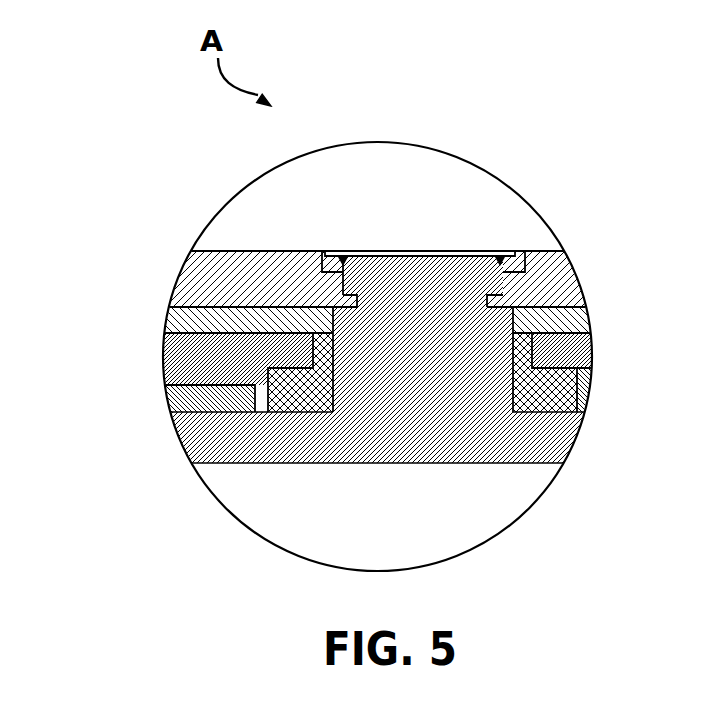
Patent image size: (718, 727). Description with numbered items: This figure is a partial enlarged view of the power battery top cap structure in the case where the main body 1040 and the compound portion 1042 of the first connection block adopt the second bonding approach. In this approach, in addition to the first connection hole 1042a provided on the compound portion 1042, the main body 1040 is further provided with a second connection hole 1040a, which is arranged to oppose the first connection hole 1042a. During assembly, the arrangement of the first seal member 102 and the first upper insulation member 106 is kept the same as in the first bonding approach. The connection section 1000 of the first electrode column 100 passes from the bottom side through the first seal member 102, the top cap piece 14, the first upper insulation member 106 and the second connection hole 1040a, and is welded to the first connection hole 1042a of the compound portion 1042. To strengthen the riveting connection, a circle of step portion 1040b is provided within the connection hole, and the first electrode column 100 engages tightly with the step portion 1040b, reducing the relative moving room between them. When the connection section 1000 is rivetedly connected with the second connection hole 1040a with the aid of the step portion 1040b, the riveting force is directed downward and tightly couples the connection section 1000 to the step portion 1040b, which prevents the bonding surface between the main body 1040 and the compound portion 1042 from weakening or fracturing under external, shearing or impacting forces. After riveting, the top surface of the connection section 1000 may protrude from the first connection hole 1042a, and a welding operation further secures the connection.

The first electrode column 100 is at (197, 437).
The first seal member 102 is at (555, 398).
The top cap piece 14 is at (205, 363).
The first upper insulation member 106 is at (572, 318).
The connection section 1000 is at (453, 283).
The main body 1040 is at (555, 278).
The second connection hole 1040a is at (341, 275).
The step portion 1040b is at (355, 302).
The compound portion 1042 is at (518, 258).
The first connection hole 1042a is at (323, 252).